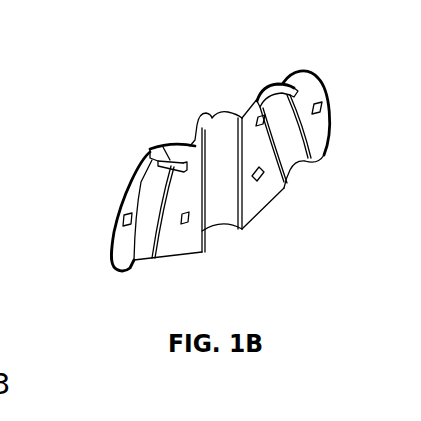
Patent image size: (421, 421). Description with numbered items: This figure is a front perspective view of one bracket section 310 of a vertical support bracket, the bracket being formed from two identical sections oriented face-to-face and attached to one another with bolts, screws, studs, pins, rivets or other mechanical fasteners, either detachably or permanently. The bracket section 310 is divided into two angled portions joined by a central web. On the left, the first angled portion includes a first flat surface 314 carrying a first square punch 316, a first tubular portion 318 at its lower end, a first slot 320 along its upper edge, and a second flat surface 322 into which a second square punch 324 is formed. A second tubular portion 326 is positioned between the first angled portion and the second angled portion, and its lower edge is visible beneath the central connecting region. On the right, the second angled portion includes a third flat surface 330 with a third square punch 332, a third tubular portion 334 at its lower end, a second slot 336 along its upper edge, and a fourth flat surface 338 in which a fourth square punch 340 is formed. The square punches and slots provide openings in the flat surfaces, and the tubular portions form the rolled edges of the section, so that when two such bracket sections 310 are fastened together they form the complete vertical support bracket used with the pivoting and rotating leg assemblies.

The bracket section 310 is at (181, 87).
The first flat surface 314 is at (113, 238).
The first square punch 316 is at (122, 216).
The first tubular portion 318 is at (134, 266).
The first slot 320 is at (170, 150).
The second flat surface 322 is at (187, 257).
The second square punch 324 is at (186, 225).
The second tubular portion 326 is at (214, 231).
The third flat surface 330 is at (266, 208).
The third square punch 332 is at (257, 166).
The third tubular portion 334 is at (292, 167).
The second slot 336 is at (268, 82).
The fourth flat surface 338 is at (308, 70).
The fourth square punch 340 is at (323, 104).